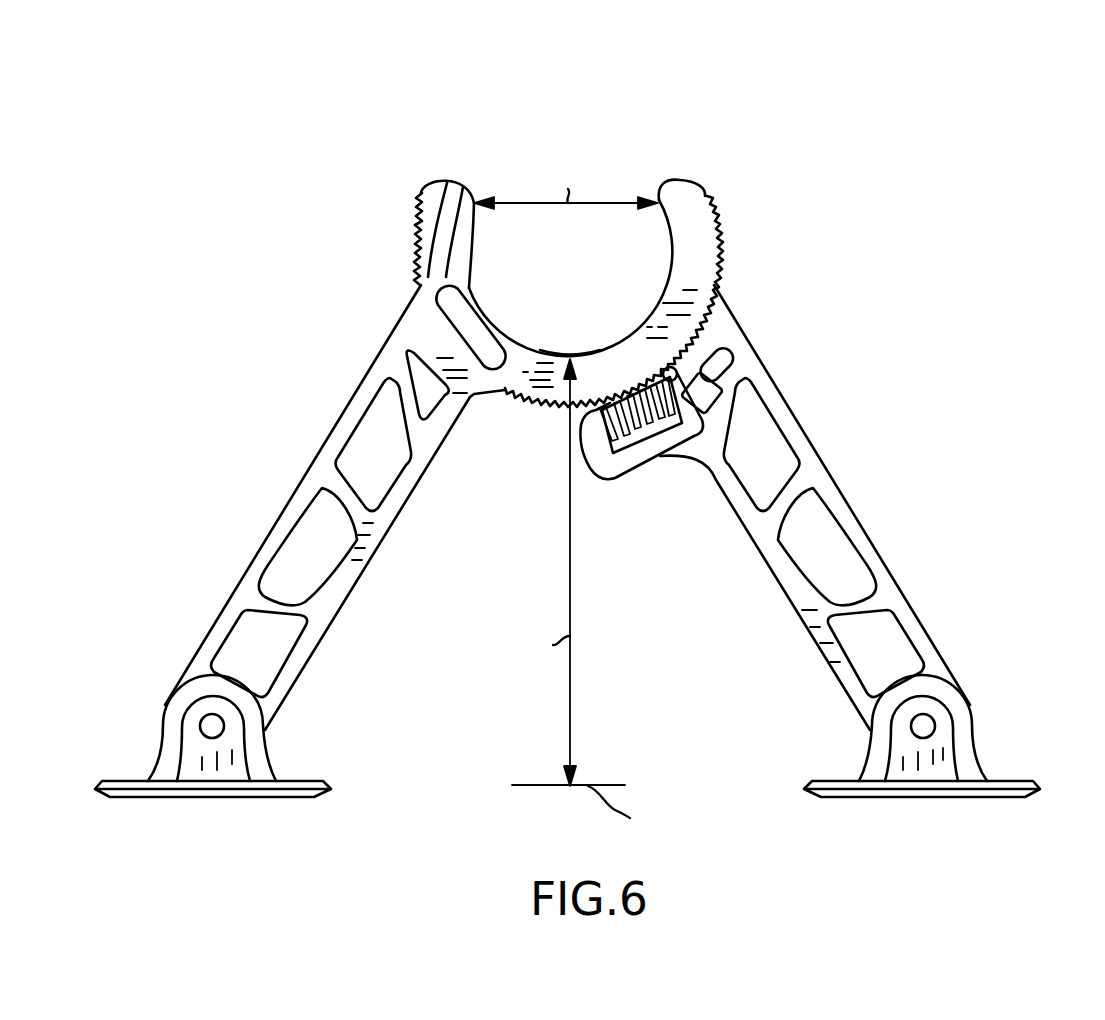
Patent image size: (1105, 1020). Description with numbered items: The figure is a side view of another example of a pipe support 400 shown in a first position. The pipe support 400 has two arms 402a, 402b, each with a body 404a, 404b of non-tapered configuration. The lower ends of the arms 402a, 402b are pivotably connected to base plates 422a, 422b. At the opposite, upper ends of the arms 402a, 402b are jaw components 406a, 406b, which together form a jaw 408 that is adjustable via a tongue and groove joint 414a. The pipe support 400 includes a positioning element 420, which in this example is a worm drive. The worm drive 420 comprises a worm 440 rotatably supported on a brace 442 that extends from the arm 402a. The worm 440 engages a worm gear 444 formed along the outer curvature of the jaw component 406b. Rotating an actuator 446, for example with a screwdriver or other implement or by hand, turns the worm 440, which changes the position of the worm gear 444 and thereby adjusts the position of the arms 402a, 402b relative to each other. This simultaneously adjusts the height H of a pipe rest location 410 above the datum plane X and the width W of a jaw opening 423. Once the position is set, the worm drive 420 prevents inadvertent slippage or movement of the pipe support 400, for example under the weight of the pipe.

The pipe support 400 is at (936, 107).
The jaw 408 is at (610, 130).
The jaw component 406a is at (441, 184).
The jaw component 406b is at (688, 215).
The tongue and groove joint 414a is at (465, 167).
The worm gear 444 is at (722, 252).
The jaw opening 423 is at (526, 217).
The pipe rest location 410 is at (570, 338).
The positioning element 420 is at (585, 498).
The arm 402a is at (921, 476).
The arm 402b is at (260, 468).
The body 404a is at (920, 642).
The body 404b is at (238, 610).
The base plate 422a is at (940, 787).
The base plate 422b is at (213, 796).
The worm 440 is at (652, 425).
The brace 442 is at (628, 458).
The actuator 446 is at (706, 386).